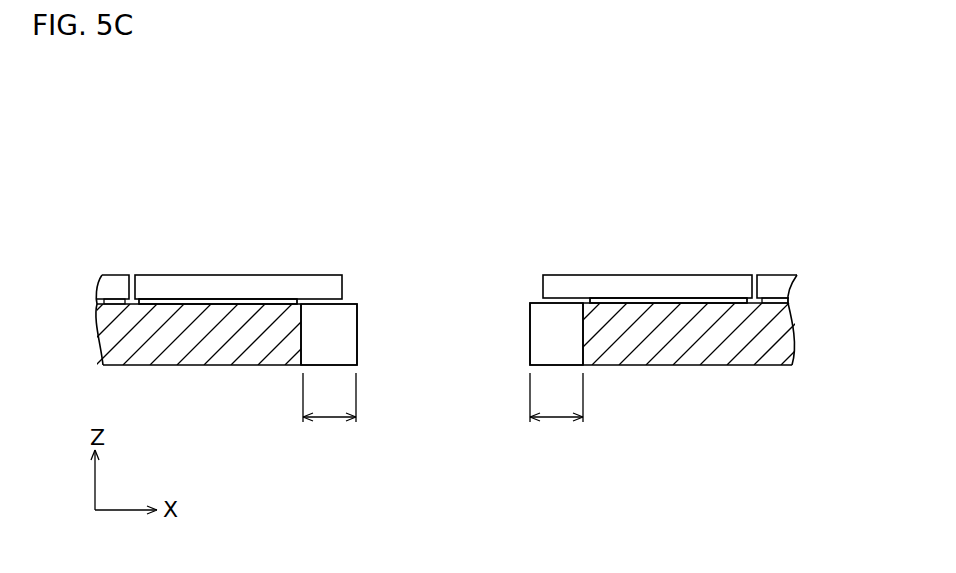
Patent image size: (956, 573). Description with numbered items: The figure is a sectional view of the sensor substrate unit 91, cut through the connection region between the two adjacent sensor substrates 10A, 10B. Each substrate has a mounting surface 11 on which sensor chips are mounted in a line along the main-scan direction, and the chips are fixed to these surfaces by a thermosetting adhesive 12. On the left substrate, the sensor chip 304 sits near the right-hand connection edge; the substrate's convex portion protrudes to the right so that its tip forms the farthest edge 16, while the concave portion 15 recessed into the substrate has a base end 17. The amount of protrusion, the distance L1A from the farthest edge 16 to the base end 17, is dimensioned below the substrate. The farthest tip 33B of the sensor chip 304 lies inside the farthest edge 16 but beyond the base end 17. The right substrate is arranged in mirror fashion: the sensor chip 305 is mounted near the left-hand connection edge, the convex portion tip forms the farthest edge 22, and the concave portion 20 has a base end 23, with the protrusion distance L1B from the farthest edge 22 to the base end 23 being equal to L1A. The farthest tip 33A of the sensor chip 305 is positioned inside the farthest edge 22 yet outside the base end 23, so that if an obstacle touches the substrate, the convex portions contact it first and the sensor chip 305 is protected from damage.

The sensor substrate unit 91 is at (473, 220).
The sensor substrate 10A is at (213, 366).
The sensor substrate 10B is at (658, 366).
The mounting surface 11 is at (111, 277).
The thermosetting adhesive 12 is at (263, 302).
The concave portion 15 is at (338, 358).
The farthest edge 16 is at (357, 308).
The base end 17 is at (302, 340).
The concave portion 20 is at (533, 363).
The farthest edge 22 is at (550, 350).
The base end 23 is at (583, 340).
The sensor chip 304 is at (260, 275).
The sensor chip 305 is at (595, 275).
The farthest tip 33A is at (543, 280).
The farthest tip 33B is at (342, 285).
The distance L1A is at (329, 411).
The distance L1B is at (556, 411).